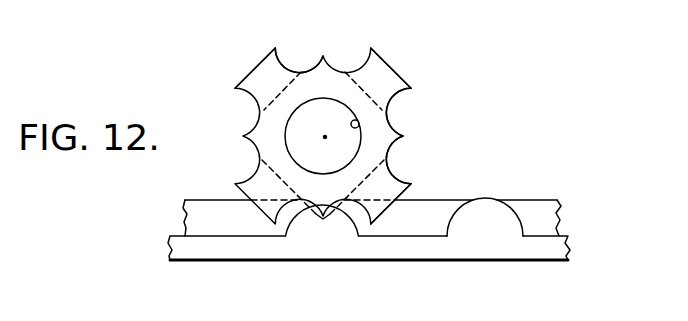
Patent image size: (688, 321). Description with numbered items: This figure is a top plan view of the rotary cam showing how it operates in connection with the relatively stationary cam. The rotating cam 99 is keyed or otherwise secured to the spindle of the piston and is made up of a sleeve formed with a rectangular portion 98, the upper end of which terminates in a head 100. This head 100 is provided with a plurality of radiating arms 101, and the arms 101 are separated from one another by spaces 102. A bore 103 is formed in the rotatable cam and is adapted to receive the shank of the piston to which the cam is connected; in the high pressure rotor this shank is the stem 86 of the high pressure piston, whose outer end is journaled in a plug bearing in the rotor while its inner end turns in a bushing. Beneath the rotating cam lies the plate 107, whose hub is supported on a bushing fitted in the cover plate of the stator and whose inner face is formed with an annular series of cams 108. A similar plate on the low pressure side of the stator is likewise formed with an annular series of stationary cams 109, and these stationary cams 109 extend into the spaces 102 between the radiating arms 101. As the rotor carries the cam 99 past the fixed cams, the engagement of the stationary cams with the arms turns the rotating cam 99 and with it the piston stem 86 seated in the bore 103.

The stem 86 is at (310, 139).
The rectangular portion 98 is at (321, 66).
The rotating cam 99 is at (377, 144).
The head 100 is at (379, 64).
The radiating arm 101 is at (263, 70).
The space 102 is at (300, 61).
The bore 103 is at (359, 125).
The plate 107 is at (422, 253).
The cam 108 is at (485, 210).
The stationary cam 109 is at (420, 207).